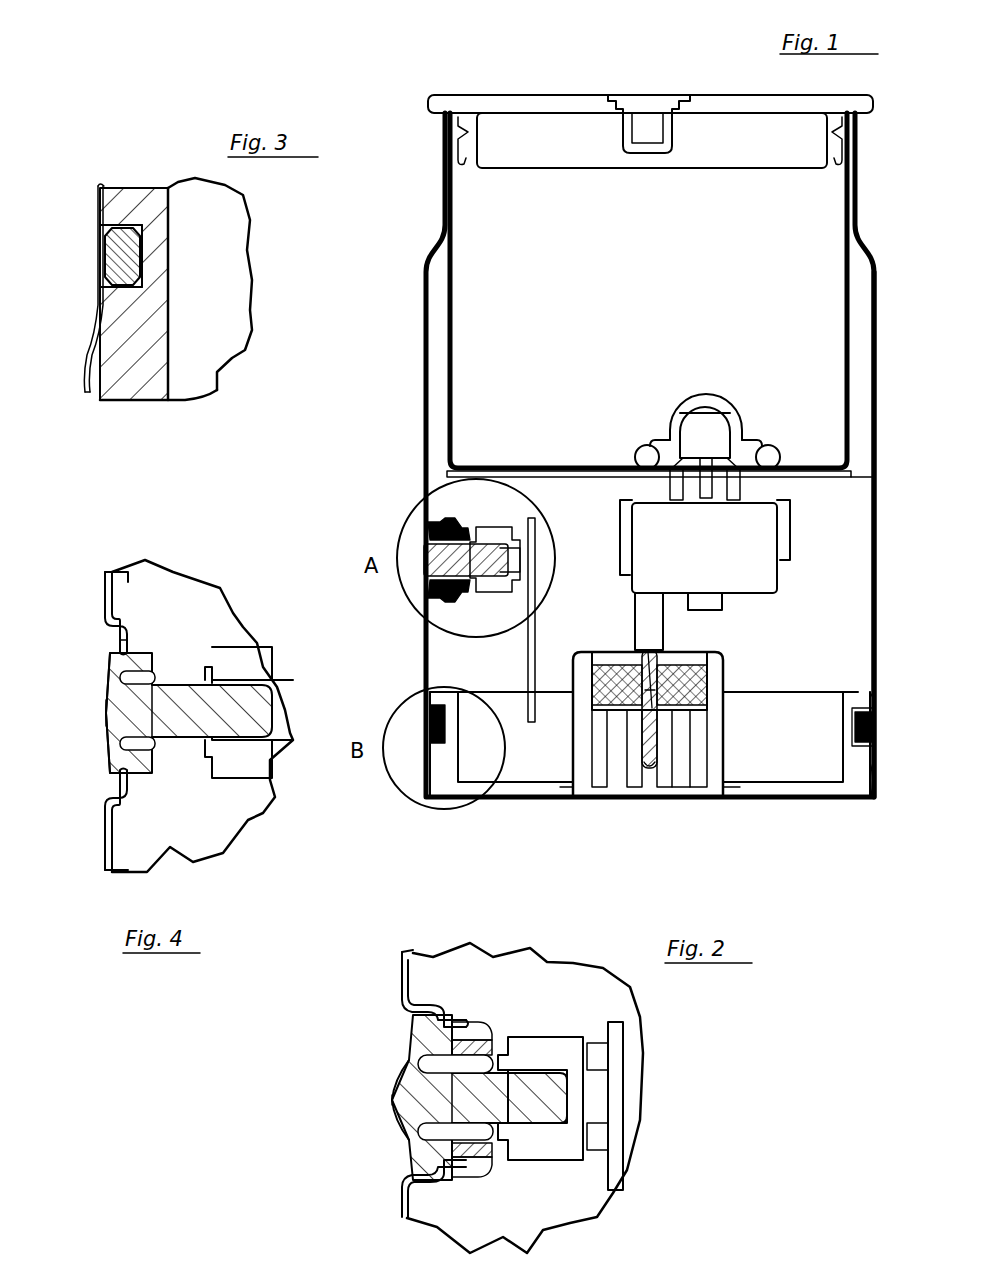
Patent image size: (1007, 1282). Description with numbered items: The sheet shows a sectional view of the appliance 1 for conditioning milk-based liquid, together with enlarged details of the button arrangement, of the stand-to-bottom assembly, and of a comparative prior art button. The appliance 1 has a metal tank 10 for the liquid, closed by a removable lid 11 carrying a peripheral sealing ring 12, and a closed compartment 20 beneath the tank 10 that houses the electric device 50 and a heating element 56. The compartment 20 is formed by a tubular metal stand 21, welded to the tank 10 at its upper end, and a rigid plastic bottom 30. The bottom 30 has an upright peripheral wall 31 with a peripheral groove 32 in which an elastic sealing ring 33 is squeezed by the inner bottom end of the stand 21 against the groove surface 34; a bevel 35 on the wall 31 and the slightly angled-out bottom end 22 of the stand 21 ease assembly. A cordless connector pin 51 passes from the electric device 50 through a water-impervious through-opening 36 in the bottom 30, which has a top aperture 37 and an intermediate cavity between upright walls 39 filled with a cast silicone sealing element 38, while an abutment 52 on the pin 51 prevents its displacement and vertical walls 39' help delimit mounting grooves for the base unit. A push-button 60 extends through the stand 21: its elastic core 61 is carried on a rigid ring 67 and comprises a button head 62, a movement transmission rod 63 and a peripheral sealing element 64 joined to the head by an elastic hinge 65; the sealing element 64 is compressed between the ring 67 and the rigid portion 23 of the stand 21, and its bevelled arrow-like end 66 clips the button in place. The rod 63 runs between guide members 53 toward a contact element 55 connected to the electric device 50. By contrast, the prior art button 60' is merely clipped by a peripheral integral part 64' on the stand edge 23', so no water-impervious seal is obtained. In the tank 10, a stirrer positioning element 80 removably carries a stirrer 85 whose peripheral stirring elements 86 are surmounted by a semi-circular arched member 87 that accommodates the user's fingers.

In FIG. 1, the appliance 1 is at (410, 255).
In FIG. 1, the tank 10 is at (453, 272).
In FIG. 1, the lid 11 is at (578, 150).
In FIG. 1, the peripheral sealing ring 12 is at (835, 160).
In FIG. 1, the compartment 20 is at (851, 492).
In FIG. 3, the compartment 20 is at (210, 289).
In FIG. 4, the compartment 20 is at (202, 716).
In FIG. 2, the compartment 20 is at (525, 1098).
In FIG. 1, the tubular stand 21 is at (878, 535).
In FIG. 3, the tubular stand 21 is at (100, 252).
In FIG. 4, the tubular stand 21 is at (108, 580).
In FIG. 2, the tubular stand 21 is at (400, 978).
In FIG. 1, the bottom end of stand 22 is at (880, 790).
In FIG. 3, the bottom end of stand 22 is at (88, 388).
In FIG. 2, the portion of stand 23 is at (451, 1002).
In FIG. 4, the edge of stand 23' is at (150, 629).
In FIG. 1, the bottom 30 is at (790, 792).
In FIG. 3, the bottom 30 is at (152, 400).
In FIG. 1, the upright peripheral wall 31 is at (852, 763).
In FIG. 3, the upright peripheral wall 31 is at (150, 358).
In FIG. 1, the peripheral groove 32 is at (870, 700).
In FIG. 3, the peripheral groove 32 is at (135, 290).
In FIG. 1, the peripheral sealing ring 33 is at (878, 720).
In FIG. 3, the peripheral sealing ring 33 is at (115, 268).
In FIG. 1, the groove surface 34 is at (855, 725).
In FIG. 3, the groove surface 34 is at (137, 240).
In FIG. 1, the bevel 35 is at (878, 700).
In FIG. 3, the bevel 35 is at (110, 203).
In FIG. 1, the through-opening 36 is at (655, 672).
In FIG. 1, the top aperture 37 is at (636, 662).
In FIG. 1, the sealing element 38 is at (690, 690).
In FIG. 1, the upright walls 39 is at (650, 713).
In FIG. 1, the vertical walls 39' is at (700, 823).
In FIG. 1, the electric device 50 is at (612, 552).
In FIG. 1, the connector pin 51 is at (648, 762).
In FIG. 1, the abutment 52 is at (640, 690).
In FIG. 4, the guide members 53 is at (250, 672).
In FIG. 2, the guide members 53 is at (548, 1057).
In FIG. 2, the contact element 55 is at (600, 1100).
In FIG. 1, the heating element 56 is at (585, 478).
In FIG. 1, the push-button 60 is at (419, 543).
In FIG. 2, the push-button 60 is at (327, 1140).
In FIG. 4, the prior art button 60' is at (74, 675).
In FIG. 4, the core 61 is at (132, 703).
In FIG. 2, the core 61 is at (438, 1105).
In FIG. 4, the button head 62 is at (115, 718).
In FIG. 2, the button head 62 is at (402, 1108).
In FIG. 4, the movement transmission rod 63 is at (180, 730).
In FIG. 2, the movement transmission rod 63 is at (530, 1115).
In FIG. 2, the peripheral sealing element 64 is at (429, 1043).
In FIG. 4, the peripheral integral part 64' is at (154, 694).
In FIG. 2, the elastic deformable hinge 65 is at (418, 1128).
In FIG. 2, the bevelled arrow-like end portion 66 is at (488, 1030).
In FIG. 2, the rigid ring 67 is at (495, 1046).
In FIG. 1, the stirrer positioning element 80 is at (712, 445).
In FIG. 1, the stirrer 85 is at (660, 420).
In FIG. 1, the stirring elements 86 is at (772, 452).
In FIG. 1, the arched member 87 is at (690, 395).